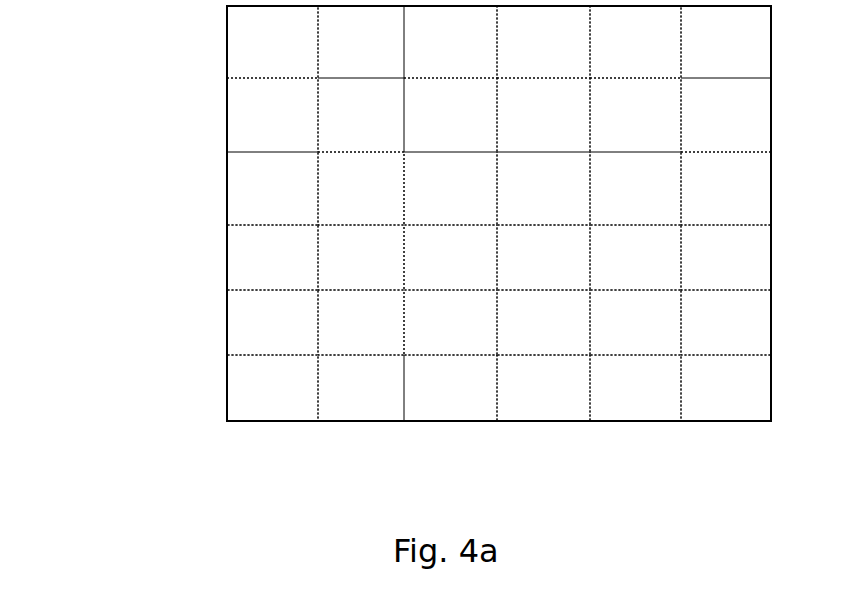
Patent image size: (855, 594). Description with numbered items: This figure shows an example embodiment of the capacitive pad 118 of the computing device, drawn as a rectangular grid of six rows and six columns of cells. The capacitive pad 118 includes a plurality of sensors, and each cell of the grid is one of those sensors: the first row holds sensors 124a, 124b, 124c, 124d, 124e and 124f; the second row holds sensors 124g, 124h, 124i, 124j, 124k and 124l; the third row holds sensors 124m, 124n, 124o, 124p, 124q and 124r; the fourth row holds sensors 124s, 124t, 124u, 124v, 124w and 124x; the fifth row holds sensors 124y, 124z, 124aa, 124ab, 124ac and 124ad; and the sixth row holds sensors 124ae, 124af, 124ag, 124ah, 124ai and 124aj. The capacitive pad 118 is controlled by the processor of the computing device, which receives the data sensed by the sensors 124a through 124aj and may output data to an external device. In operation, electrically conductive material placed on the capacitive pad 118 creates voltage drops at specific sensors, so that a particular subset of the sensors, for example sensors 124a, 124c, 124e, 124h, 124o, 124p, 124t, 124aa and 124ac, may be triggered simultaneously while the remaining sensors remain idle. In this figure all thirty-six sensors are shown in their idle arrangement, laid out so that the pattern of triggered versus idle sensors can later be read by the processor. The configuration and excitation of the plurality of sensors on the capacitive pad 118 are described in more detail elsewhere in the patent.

The sensor 124a is at (272, 42).
The sensor 124b is at (361, 42).
The sensor 124c is at (450, 42).
The sensor 124d is at (543, 42).
The sensor 124e is at (635, 42).
The sensor 124f is at (726, 42).
The sensor 124g is at (272, 115).
The sensor 124h is at (361, 115).
The sensor 124i is at (450, 115).
The sensor 124j is at (543, 115).
The sensor 124k is at (635, 115).
The sensor 124l is at (726, 115).
The sensor 124m is at (272, 188).
The sensor 124n is at (361, 188).
The sensor 124o is at (450, 188).
The sensor 124p is at (543, 188).
The sensor 124q is at (635, 188).
The sensor 124r is at (726, 188).
The sensor 124s is at (272, 257).
The sensor 124t is at (361, 257).
The sensor 124u is at (450, 257).
The sensor 124v is at (543, 257).
The sensor 124w is at (635, 257).
The sensor 124x is at (726, 257).
The sensor 124y is at (272, 322).
The sensor 124z is at (361, 322).
The sensor 124aa is at (450, 322).
The sensor 124ab is at (543, 322).
The sensor 124ac is at (635, 322).
The sensor 124ad is at (726, 322).
The sensor 124ae is at (272, 388).
The sensor 124af is at (361, 388).
The sensor 124ag is at (450, 388).
The sensor 124ah is at (543, 388).
The sensor 124ai is at (635, 388).
The sensor 124aj is at (726, 388).
The capacitive pad 118 is at (180, 182).